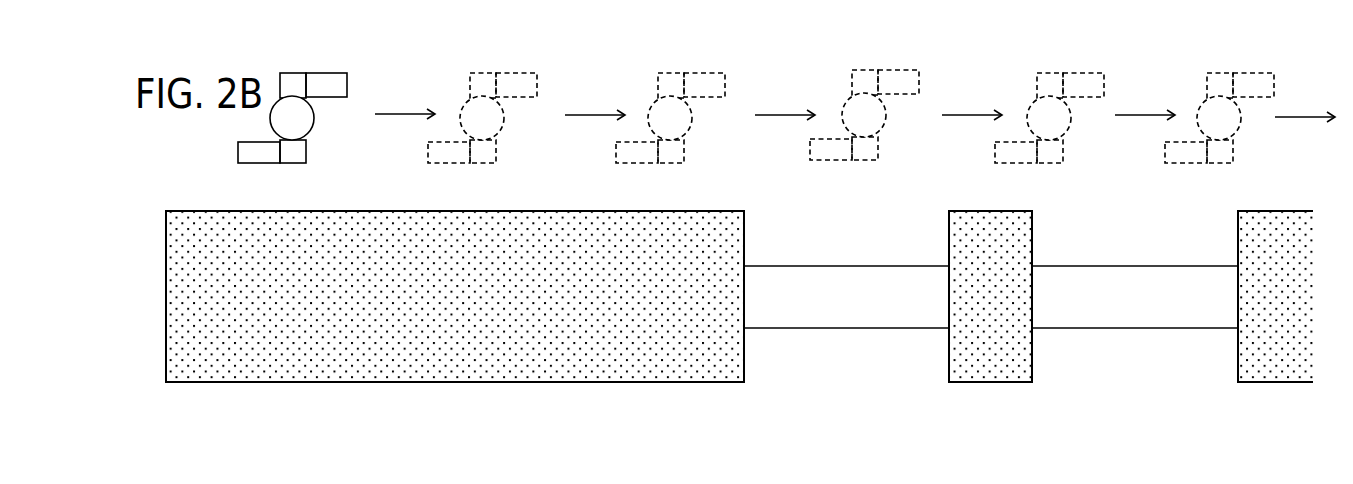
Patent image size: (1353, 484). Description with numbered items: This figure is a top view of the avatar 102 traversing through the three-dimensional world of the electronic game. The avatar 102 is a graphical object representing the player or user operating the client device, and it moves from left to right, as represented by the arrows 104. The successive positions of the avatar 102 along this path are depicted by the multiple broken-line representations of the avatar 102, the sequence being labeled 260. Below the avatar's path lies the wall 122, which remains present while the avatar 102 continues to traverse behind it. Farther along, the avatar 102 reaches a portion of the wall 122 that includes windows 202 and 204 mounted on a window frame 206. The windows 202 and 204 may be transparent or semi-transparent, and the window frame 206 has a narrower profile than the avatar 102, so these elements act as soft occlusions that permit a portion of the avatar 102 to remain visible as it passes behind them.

The avatar 102 is at (292, 82).
The arrows 104 is at (607, 113).
The wall 122 is at (732, 247).
The window 202 is at (888, 290).
The window 204 is at (1170, 293).
The window frame 206 is at (1020, 353).
The robot motion sequence 260 is at (466, 31).